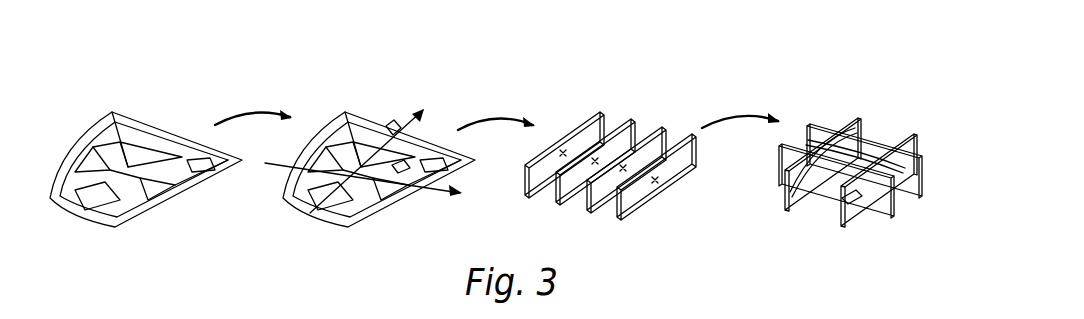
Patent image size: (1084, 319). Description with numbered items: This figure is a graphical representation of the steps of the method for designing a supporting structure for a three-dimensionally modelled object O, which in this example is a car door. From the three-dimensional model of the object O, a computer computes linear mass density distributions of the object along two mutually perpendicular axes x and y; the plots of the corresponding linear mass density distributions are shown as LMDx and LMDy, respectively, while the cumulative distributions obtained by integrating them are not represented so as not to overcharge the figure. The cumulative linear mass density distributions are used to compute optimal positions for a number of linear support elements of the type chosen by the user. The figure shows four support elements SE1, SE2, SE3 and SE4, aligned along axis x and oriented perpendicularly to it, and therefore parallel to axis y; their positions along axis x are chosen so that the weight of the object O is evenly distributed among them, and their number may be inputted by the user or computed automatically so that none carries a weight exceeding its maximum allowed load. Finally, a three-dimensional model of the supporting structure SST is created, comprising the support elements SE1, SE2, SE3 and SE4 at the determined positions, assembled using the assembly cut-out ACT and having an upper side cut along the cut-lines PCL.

The three-dimensionally modelled object O is at (90, 130).
The axis x is at (371, 185).
The axis y is at (378, 159).
The plot of the linear mass density distribution along axis x LMDx is at (400, 170).
The plot of the linear mass density distribution along axis y LMDy is at (392, 125).
The support element SE1 is at (585, 118).
The support element SE2 is at (633, 122).
The support element SE3 is at (665, 128).
The support element SE4 is at (627, 213).
The model of the supporting structure SST is at (871, 165).
The cut-lines PCL is at (887, 160).
The assembly cut-out ACT is at (850, 207).